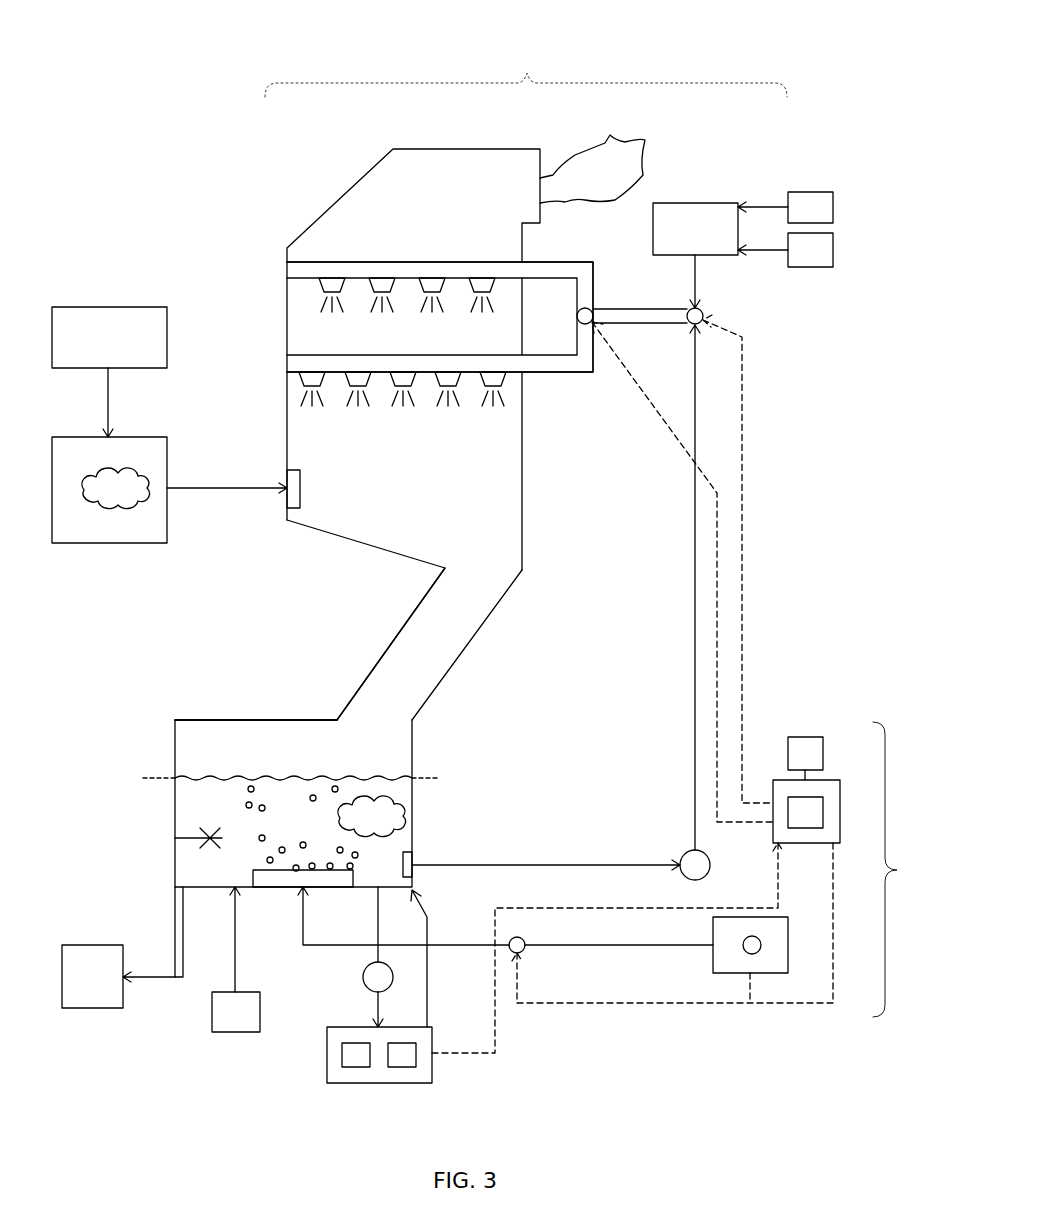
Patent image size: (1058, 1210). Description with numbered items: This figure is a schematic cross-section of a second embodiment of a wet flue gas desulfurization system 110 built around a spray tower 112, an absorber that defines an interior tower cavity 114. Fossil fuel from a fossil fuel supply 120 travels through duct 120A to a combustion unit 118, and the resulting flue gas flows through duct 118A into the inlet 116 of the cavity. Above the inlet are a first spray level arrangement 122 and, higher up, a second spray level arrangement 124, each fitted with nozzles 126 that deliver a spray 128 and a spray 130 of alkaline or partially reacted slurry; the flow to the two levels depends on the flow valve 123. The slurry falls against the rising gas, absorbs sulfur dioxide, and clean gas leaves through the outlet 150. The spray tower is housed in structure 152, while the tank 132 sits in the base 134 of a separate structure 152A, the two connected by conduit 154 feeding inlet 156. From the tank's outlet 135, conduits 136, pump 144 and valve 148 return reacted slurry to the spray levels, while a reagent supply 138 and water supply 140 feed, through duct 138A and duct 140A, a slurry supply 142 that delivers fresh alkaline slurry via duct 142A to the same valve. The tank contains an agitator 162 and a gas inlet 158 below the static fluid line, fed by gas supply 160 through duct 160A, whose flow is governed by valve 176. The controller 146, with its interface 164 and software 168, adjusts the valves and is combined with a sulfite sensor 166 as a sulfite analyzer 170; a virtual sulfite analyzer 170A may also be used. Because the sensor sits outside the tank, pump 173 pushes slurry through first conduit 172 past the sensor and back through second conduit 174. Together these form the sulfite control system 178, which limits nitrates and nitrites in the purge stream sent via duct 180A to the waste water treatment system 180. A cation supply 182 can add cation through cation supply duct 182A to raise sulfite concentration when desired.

The wet flue gas desulfurization system 110 is at (527, 80).
The spray tower 112 is at (340, 190).
The interior tower cavity 114 is at (287, 332).
The inlet 116 is at (285, 472).
The combustion unit 118 is at (118, 545).
The duct 118A is at (200, 486).
The fossil fuel supply 120 is at (112, 305).
The duct 120A is at (112, 402).
The first spray level arrangement 122 is at (545, 375).
The flow valve 123 is at (592, 311).
The second spray level arrangement 124 is at (570, 262).
The nozzles 126 is at (340, 278).
The spray 128 is at (350, 408).
The spray 130 is at (338, 308).
The tank 132 is at (176, 868).
The base 134 is at (180, 898).
The outlet 135 is at (412, 868).
The conduits 136 is at (650, 309).
The reagent supply 138 is at (805, 192).
The duct 138A is at (776, 207).
The water supply 140 is at (835, 250).
The duct 140A is at (775, 252).
The slurry supply 142 is at (697, 203).
The duct 142A is at (705, 318).
The pump 144 is at (690, 850).
The controller 146 is at (832, 780).
The valve 148 is at (683, 327).
The outlet 150 is at (548, 150).
The structure 152 is at (502, 484).
The structure 152A is at (218, 720).
The conduit 154 is at (470, 632).
The inlet 156 is at (400, 760).
The gas inlet 158 is at (290, 880).
The gas supply 160 is at (752, 975).
The duct 160A is at (494, 960).
The agitator 162 is at (200, 834).
The interface 164 is at (805, 745).
The sulfite sensor 166 is at (375, 1085).
The software 168 is at (805, 830).
The sulfite analyzer 170 is at (341, 1056).
The virtual sulfite analyzer 170A is at (418, 1056).
The first conduit 172 is at (378, 935).
The pump 173 is at (368, 985).
The second conduit 174 is at (432, 1008).
The valve 176 is at (516, 936).
The sulfite control system 178 is at (900, 870).
The waste water treatment system 180 is at (100, 1000).
The duct 180A is at (175, 955).
The cation supply 182 is at (235, 1034).
The cation supply duct 182A is at (238, 962).